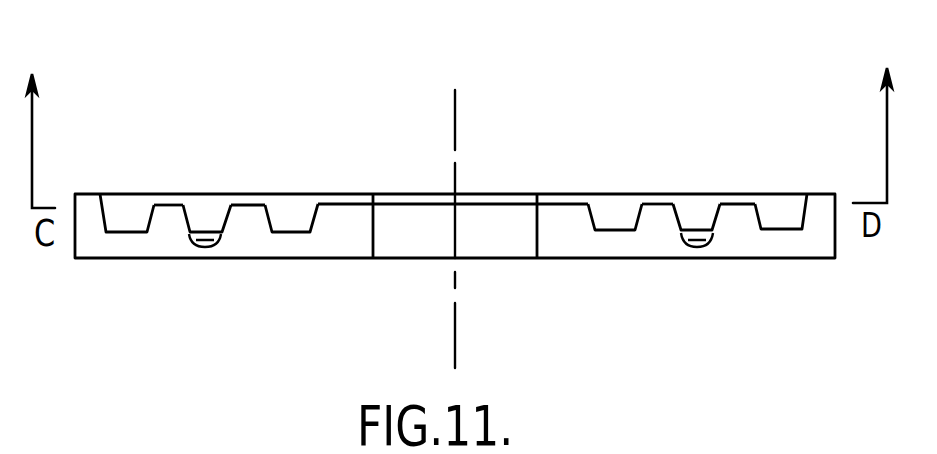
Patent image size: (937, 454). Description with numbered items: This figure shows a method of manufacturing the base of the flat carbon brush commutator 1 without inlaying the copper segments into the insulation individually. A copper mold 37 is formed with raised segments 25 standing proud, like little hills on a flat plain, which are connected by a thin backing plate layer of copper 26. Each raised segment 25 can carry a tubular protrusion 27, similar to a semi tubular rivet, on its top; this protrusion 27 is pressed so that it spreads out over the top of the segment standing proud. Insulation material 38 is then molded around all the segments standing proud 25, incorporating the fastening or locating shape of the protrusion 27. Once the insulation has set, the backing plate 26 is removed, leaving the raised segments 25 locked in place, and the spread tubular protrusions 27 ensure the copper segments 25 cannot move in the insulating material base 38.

The commutator 1 is at (278, 258).
The raised segments 25 is at (130, 222).
The backing plate 26 is at (338, 202).
The tubular protrusion 27 is at (198, 240).
The copper mold 37 is at (505, 194).
The insulation material 38 is at (568, 242).